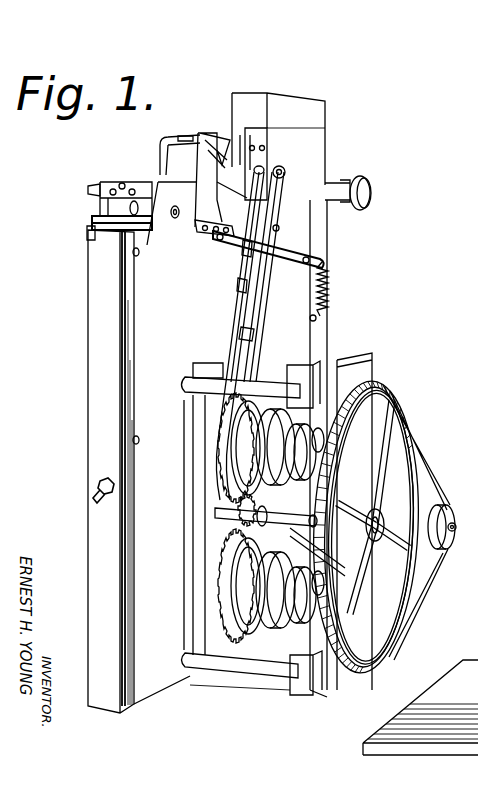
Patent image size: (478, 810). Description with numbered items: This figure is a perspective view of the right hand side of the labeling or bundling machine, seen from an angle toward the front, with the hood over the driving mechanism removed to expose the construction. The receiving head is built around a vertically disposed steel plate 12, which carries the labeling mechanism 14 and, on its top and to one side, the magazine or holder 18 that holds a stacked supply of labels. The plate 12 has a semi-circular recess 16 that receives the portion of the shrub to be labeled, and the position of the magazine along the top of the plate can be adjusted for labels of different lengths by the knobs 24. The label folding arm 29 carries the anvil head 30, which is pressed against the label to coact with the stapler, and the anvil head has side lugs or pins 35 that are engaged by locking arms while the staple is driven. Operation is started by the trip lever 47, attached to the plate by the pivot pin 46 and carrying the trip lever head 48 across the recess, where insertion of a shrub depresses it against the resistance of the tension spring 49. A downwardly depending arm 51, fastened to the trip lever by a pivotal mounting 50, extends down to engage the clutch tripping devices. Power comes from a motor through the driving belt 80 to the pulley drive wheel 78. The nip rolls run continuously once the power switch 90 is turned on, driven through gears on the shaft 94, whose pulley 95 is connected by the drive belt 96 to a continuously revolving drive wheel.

The vertically disposed steel plate 12 is at (200, 700).
The labeling mechanism 14 is at (202, 132).
The semi-circular recess 16 is at (192, 205).
The magazine or holder 18 is at (292, 105).
The knobs 24 is at (366, 183).
The label folding arm 29 is at (100, 206).
The anvil head 30 is at (123, 183).
The side lugs or pins 35 is at (94, 188).
The pivot pin 46 is at (320, 263).
The trip lever 47 is at (320, 251).
The trip lever head 48 is at (207, 205).
The tension spring 49 is at (329, 292).
The pivotal mounting 50 is at (244, 247).
The downwardly depending arm 51 is at (240, 284).
The pulley drive wheel 78 is at (385, 383).
The driving belt 80 is at (432, 468).
The power switch 90 is at (95, 497).
The shaft 94 is at (285, 173).
The pulley 95 is at (283, 166).
The drive belt 96 is at (280, 229).